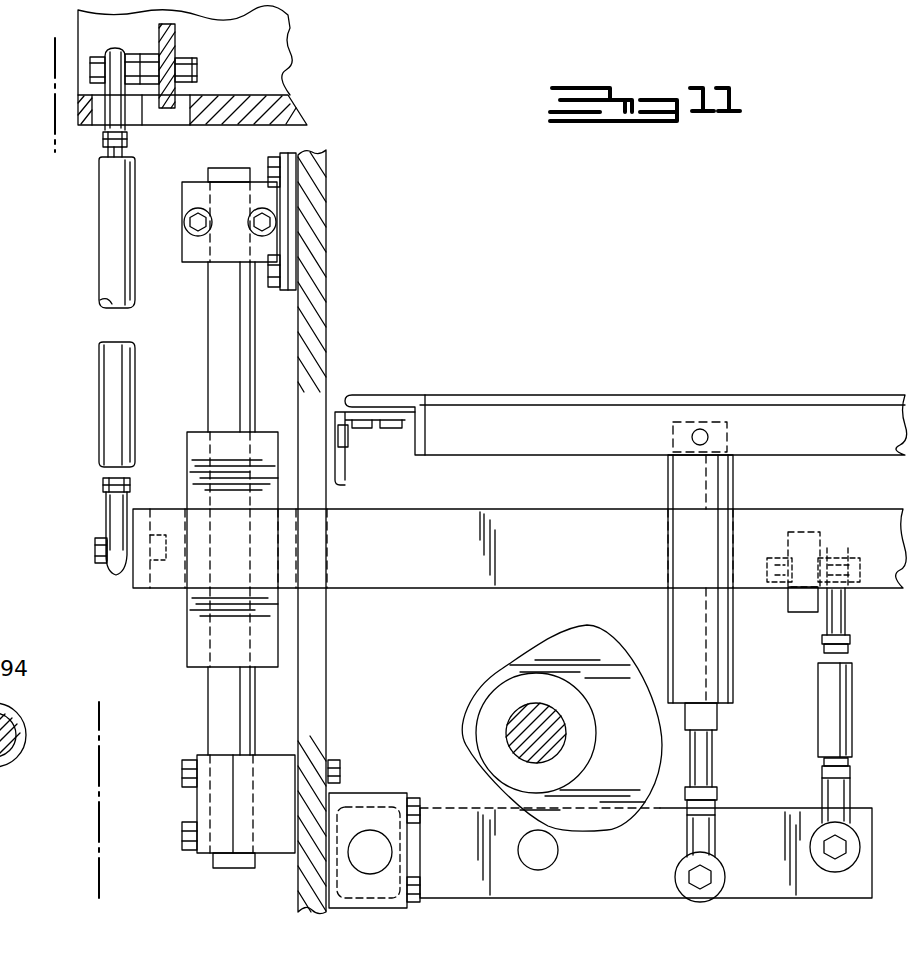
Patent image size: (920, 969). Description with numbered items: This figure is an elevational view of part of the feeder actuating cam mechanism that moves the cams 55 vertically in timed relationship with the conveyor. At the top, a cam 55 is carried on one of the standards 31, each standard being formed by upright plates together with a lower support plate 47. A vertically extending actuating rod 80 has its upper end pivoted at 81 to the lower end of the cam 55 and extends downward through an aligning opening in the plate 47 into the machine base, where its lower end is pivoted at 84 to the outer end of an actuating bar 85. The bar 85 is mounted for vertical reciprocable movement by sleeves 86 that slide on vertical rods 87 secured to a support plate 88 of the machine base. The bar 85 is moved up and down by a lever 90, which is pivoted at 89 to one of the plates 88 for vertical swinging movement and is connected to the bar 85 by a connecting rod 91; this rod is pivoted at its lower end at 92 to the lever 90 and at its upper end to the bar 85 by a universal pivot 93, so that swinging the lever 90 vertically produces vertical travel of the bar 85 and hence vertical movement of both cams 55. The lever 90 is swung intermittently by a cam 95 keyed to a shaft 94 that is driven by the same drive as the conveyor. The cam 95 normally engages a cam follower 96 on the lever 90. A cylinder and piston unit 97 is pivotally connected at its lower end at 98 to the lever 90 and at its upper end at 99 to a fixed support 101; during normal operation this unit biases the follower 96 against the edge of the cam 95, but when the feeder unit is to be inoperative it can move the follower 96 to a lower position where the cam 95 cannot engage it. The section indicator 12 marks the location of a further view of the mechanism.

The section line for FIG. 12 is at (62, 908).
The standard 31 is at (300, 62).
The lower support plate 47 is at (290, 108).
The cam 55 is at (178, 42).
The actuating rod 80 is at (108, 220).
The pivot 81 is at (140, 58).
The pivot 84 is at (95, 553).
The actuating bar 85 is at (400, 562).
The sleeve 86 is at (196, 445).
The vertical rod 87 is at (220, 350).
The support plate 88 is at (322, 274).
The pivot 89 is at (373, 840).
The lever 90 is at (773, 893).
The connecting rod 91 is at (846, 722).
The pivot 92 is at (840, 848).
The universal pivot 93 is at (836, 548).
The shaft 94 is at (514, 727).
The cam 95 is at (600, 640).
The cam follower 96 is at (546, 855).
The cylinder and piston unit 97 is at (725, 668).
The pivot 98 is at (705, 877).
The pivot 99 is at (704, 430).
The fixed support 101 is at (540, 418).